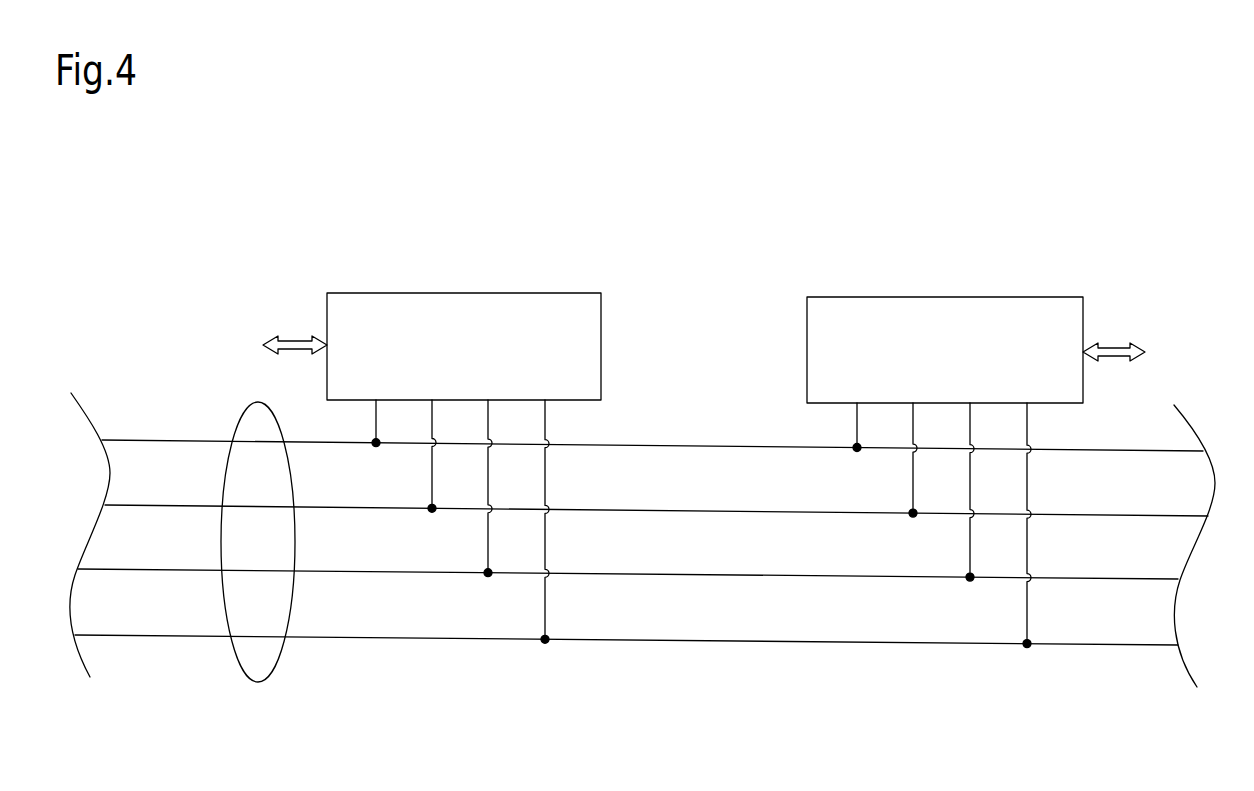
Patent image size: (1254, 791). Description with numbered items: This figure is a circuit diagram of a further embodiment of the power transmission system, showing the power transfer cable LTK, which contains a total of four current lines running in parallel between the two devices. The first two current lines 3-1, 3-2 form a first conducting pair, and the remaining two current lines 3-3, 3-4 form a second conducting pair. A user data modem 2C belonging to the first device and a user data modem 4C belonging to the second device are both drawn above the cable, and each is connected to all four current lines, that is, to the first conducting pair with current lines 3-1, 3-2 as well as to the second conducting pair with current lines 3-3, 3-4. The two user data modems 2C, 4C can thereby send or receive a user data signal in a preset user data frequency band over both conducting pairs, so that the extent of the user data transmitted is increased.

The current line 3-1 is at (677, 445).
The current line 3-2 is at (677, 510).
The current line 3-3 is at (677, 575).
The current line 3-4 is at (677, 640).
The user data modem 2C is at (432, 468).
The user data modem 4C is at (976, 472).
The power transfer cable LTK is at (258, 559).